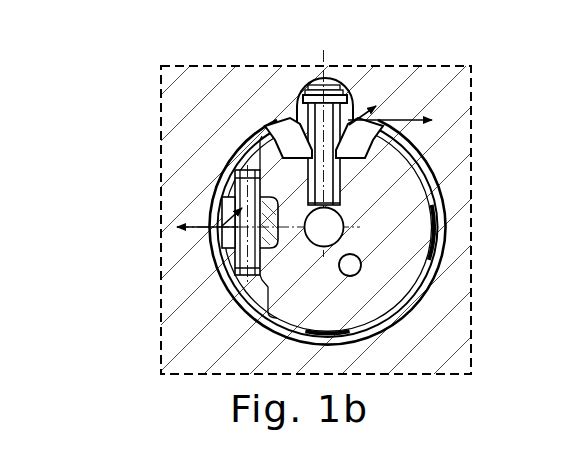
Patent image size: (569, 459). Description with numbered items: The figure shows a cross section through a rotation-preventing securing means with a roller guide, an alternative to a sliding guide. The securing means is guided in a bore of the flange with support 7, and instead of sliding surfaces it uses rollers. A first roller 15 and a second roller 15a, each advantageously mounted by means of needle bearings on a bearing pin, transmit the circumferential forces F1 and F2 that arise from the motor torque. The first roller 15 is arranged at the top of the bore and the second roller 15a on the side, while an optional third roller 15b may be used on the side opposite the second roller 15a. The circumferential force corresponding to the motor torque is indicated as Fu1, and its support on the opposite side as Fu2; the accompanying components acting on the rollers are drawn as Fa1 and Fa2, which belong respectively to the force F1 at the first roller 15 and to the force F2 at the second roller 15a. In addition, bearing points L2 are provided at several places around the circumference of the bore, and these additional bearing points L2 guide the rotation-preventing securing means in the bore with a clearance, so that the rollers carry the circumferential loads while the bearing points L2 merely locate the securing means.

The flange with support 7 is at (252, 313).
The 1st roller with needle bearing and bearing pin 15 is at (353, 107).
The 2nd roller with needle bearing and bearing pin 15a is at (222, 248).
The 3rd roller with needle bearing and bearing pin 15b is at (445, 203).
The 2nd bearing on rotation-preventing securing means L2 is at (264, 122).
The circumferential force F1 is at (285, 115).
The circumferential force F2 is at (222, 222).
The axial force component Fa1 is at (378, 106).
The circumferential force corresponding to motor torque Fu1 is at (395, 119).
The axial force component Fa2 is at (225, 197).
The support of the circumferential force Fu2 is at (218, 233).